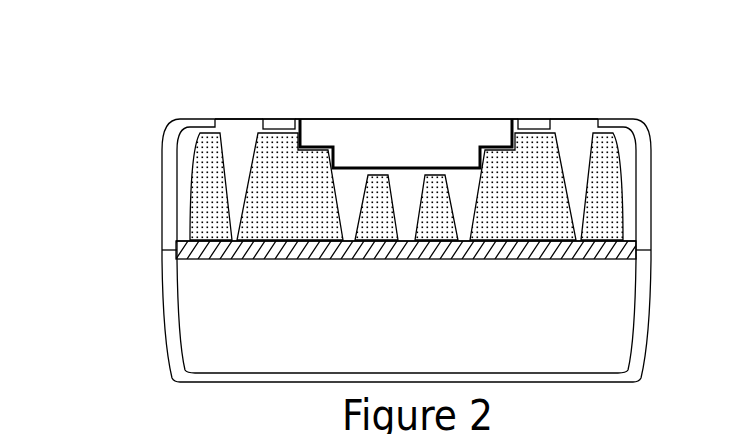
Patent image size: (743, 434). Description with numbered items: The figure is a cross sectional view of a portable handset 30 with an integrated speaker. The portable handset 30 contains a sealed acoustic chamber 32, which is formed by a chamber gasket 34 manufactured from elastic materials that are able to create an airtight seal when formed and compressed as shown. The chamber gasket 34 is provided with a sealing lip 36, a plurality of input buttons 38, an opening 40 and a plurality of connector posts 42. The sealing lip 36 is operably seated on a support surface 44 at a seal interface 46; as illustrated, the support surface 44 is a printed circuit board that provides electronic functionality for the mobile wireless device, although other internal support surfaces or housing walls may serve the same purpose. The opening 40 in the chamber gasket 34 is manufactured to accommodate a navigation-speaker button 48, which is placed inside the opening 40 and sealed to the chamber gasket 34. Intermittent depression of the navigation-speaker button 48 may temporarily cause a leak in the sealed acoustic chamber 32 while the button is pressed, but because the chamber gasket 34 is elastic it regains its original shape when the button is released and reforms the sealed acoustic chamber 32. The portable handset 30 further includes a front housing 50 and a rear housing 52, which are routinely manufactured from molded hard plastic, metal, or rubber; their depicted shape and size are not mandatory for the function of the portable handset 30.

The portable handset 30 is at (407, 65).
The sealed acoustic chamber 32 is at (278, 217).
The chamber gasket 34 is at (533, 128).
The sealing lip 36 is at (186, 200).
The input buttons 38 is at (238, 119).
The opening 40 is at (512, 119).
The connector posts 42 is at (602, 170).
The support surface 44 is at (190, 252).
The seal interface 46 is at (634, 240).
The navigation-speaker button 48 is at (342, 133).
The front housing 50 is at (633, 118).
The rear housing 52 is at (647, 330).